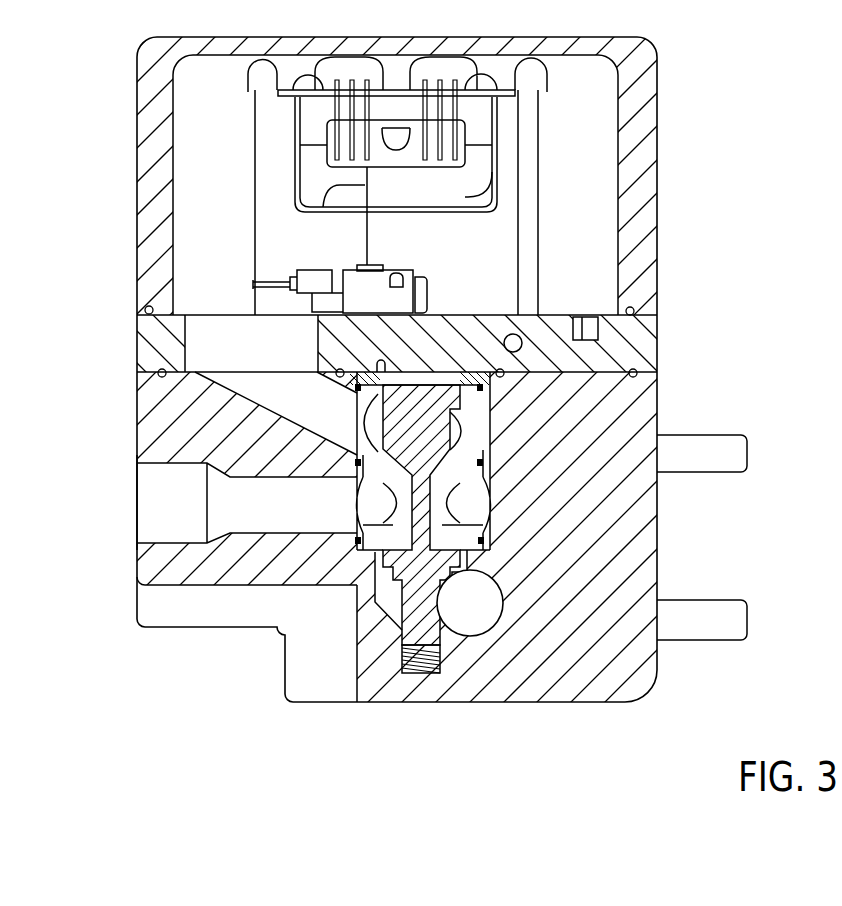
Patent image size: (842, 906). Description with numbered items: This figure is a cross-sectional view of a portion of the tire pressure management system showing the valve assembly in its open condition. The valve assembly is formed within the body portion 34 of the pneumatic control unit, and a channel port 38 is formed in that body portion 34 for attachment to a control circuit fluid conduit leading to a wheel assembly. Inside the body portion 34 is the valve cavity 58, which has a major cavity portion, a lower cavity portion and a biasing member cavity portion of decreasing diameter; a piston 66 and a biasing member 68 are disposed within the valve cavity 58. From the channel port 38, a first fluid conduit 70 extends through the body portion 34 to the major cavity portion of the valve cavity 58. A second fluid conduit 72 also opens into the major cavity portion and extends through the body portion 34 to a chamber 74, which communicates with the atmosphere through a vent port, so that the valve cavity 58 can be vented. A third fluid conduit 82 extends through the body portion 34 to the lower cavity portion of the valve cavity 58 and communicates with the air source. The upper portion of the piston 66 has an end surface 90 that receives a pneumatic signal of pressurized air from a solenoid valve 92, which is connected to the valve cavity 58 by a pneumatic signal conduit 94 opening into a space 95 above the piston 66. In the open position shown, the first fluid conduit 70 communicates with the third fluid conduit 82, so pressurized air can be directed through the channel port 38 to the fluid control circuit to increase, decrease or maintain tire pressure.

The body portion 34 is at (580, 692).
The channel port 38 is at (137, 533).
The valve cavity 58 is at (487, 506).
The piston 66 is at (393, 570).
The biasing member 68 is at (402, 652).
The first fluid conduit 70 is at (175, 495).
The second fluid conduit 72 is at (264, 394).
The chamber 74 is at (230, 187).
The third fluid conduit 82 is at (502, 628).
The end surface 90 is at (456, 382).
The solenoid valve 92 is at (392, 268).
The pneumatic signal conduit 94 is at (386, 362).
The space 95 is at (427, 378).